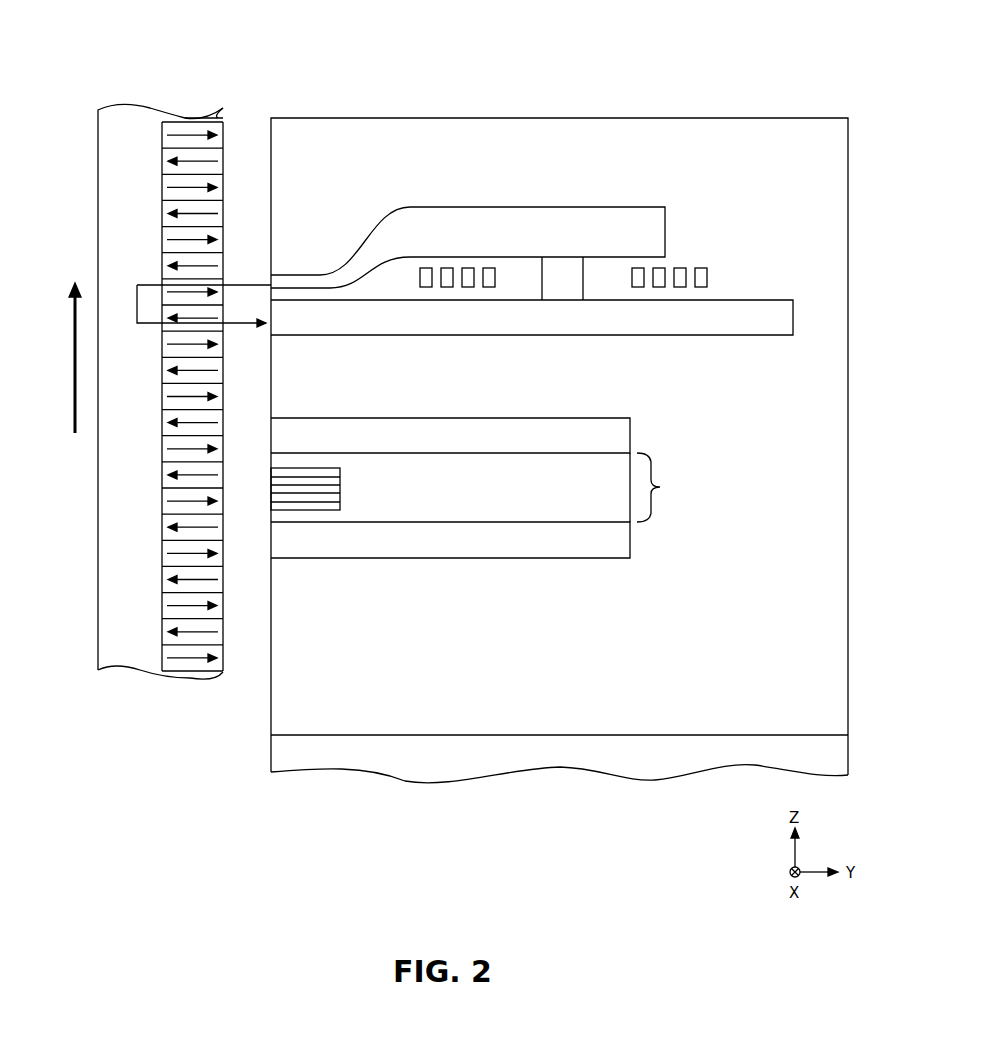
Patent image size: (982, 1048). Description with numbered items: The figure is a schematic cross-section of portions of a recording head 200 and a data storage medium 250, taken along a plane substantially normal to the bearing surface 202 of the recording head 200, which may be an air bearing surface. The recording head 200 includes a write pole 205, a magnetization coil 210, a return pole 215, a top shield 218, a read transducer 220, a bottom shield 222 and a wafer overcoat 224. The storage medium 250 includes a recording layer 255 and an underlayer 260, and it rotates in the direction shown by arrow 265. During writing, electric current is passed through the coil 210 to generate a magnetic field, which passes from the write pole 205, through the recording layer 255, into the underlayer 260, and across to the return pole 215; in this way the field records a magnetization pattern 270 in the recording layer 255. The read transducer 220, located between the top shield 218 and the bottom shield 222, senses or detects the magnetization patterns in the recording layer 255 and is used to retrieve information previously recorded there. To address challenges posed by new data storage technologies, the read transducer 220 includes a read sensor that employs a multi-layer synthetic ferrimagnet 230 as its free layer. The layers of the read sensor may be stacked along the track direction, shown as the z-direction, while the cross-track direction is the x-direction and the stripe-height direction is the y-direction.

The recording head 200 is at (688, 84).
The bearing surface 202 is at (271, 708).
The write pole 205 is at (318, 270).
The magnetization coil 210 is at (465, 266).
The return pole 215 is at (468, 316).
The top shield 218 is at (540, 440).
The read transducer 220 is at (661, 487).
The bottom shield 222 is at (560, 540).
The wafer overcoat 224 is at (770, 380).
The multi-layer synthetic ferrimagnet 230 is at (263, 497).
The data storage medium 250 is at (138, 672).
The recording layer 255 is at (182, 118).
The underlayer 260 is at (116, 650).
The arrow 265 is at (75, 358).
The magnetization pattern 270 is at (200, 133).